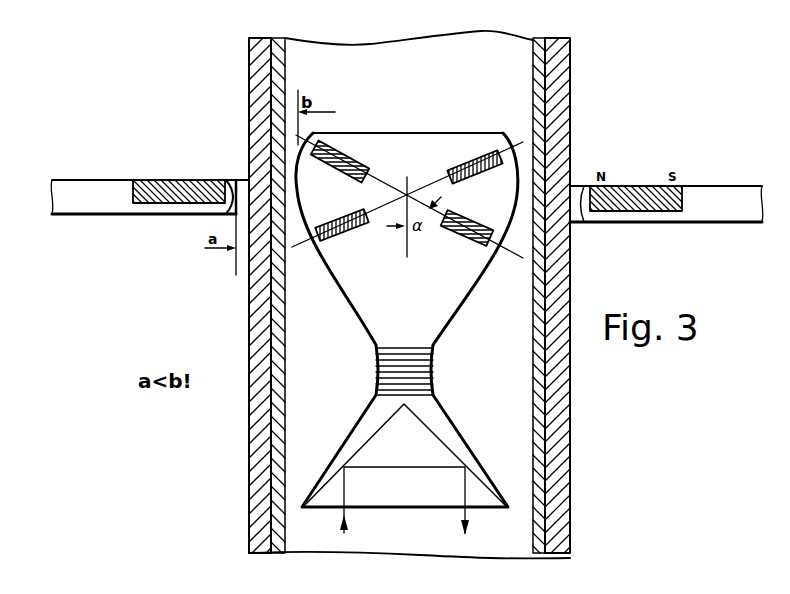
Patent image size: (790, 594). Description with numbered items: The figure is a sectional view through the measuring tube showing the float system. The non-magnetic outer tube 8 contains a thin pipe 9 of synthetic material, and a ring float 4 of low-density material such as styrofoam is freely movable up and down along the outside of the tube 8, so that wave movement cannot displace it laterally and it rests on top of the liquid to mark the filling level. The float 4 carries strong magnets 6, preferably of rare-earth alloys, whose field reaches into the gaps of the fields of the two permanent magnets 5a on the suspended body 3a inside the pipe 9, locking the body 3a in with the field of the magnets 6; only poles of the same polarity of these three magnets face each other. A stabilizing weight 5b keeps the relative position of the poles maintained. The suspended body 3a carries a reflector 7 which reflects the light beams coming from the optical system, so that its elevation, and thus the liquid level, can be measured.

The suspended body 3a is at (422, 285).
The ring float 4 is at (92, 212).
The permanent magnets 5a is at (492, 212).
The stabilizing weight 5b is at (392, 368).
The magnets 6 is at (183, 204).
The reflector 7 is at (360, 450).
The outer tube 8 is at (556, 437).
The pipe 9 is at (537, 492).